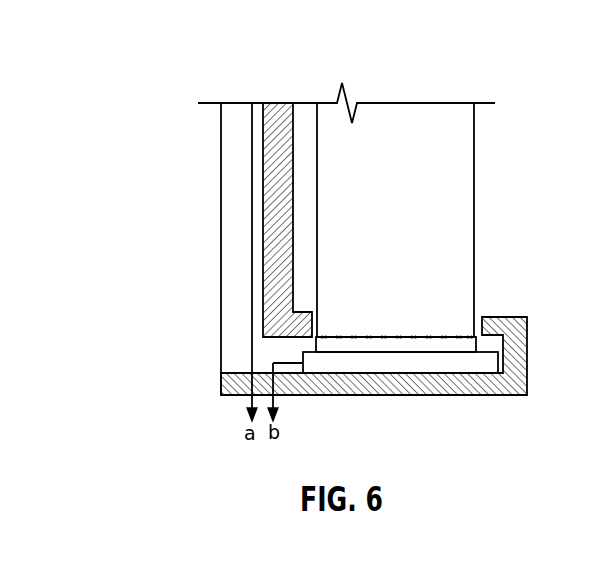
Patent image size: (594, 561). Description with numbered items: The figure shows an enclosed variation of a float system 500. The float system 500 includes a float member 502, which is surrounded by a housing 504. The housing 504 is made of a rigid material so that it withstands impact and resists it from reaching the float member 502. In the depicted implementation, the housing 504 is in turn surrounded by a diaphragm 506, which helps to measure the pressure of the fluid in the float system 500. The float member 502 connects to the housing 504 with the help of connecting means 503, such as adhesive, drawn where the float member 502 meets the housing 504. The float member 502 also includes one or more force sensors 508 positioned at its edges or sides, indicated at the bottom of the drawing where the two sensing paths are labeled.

The float system 500 is at (174, 83).
The float member 502 is at (461, 157).
The connecting means 503 is at (425, 336).
The housing 504 is at (276, 192).
The diaphragm 506 is at (221, 290).
The force sensors 508 is at (245, 409).